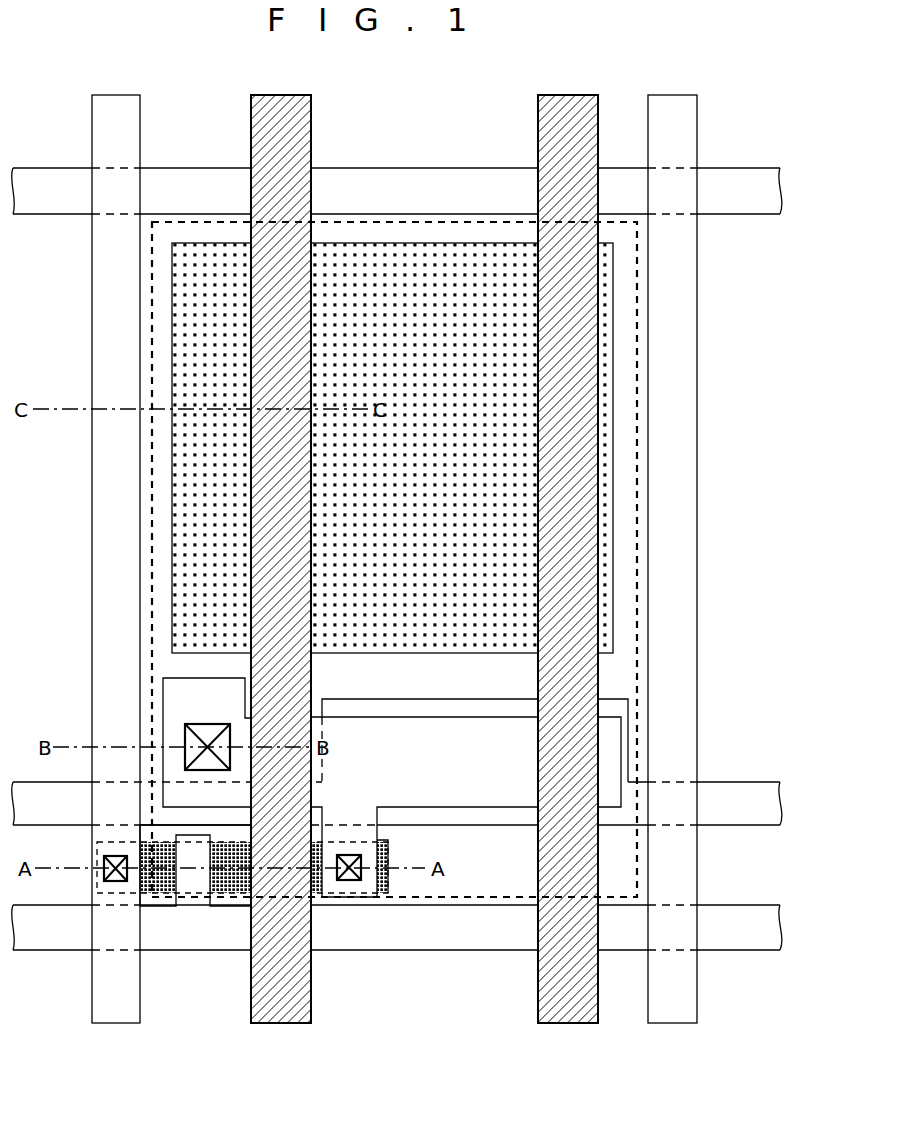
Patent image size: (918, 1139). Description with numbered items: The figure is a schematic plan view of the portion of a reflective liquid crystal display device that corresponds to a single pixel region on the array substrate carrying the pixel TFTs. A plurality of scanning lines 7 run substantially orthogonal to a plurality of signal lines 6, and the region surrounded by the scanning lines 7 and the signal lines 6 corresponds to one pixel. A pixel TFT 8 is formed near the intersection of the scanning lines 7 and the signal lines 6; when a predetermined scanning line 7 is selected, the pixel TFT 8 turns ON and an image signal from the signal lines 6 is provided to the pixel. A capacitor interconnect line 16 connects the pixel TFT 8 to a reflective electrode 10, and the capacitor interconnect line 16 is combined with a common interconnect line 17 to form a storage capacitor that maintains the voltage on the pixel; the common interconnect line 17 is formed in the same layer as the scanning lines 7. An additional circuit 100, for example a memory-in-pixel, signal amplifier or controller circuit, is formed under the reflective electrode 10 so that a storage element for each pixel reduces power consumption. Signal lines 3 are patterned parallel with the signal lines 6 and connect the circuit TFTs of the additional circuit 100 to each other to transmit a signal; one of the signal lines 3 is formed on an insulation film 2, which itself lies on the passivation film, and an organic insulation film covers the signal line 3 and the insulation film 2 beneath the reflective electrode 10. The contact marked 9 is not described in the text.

The insulation film 2 is at (280, 1012).
The signal lines 3 is at (570, 1008).
The signal lines 6 is at (118, 1010).
The scanning lines 7 is at (742, 194).
The pixel TFT 8 is at (190, 924).
The contact hole 9 is at (182, 743).
The reflective electrode 10 is at (145, 643).
The capacitor interconnect line 16 is at (183, 697).
The common interconnect line 17 is at (745, 812).
The additional circuit 100 is at (600, 481).